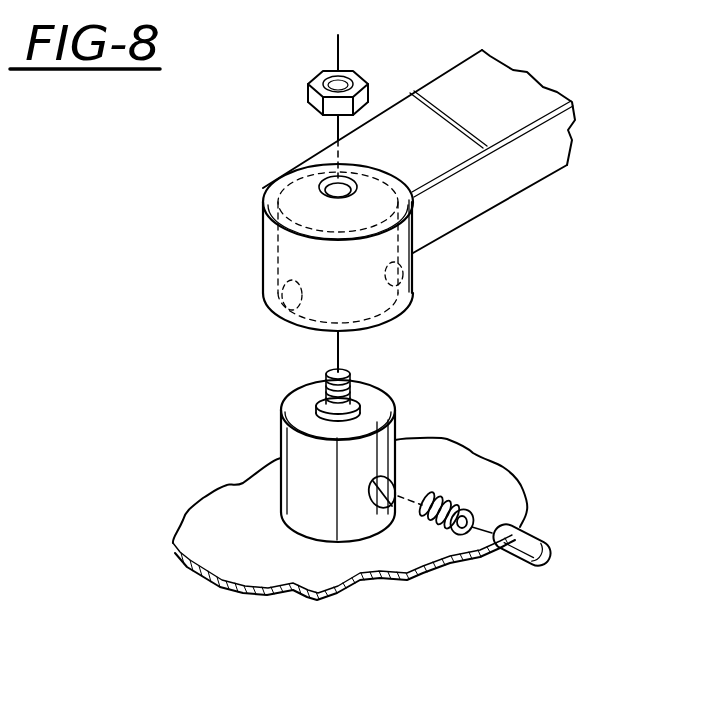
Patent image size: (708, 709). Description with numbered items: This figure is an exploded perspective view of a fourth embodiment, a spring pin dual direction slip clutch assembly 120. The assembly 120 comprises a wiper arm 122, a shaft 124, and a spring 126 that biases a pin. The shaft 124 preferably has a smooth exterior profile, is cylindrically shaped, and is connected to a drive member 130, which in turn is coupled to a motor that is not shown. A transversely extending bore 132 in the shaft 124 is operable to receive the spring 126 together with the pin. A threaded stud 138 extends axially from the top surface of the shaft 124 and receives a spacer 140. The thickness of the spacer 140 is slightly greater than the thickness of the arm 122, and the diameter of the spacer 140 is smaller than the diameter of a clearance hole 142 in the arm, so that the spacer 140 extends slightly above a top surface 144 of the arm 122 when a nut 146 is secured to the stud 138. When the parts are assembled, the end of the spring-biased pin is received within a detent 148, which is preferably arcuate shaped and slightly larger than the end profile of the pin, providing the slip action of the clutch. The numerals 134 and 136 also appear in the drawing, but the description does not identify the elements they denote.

The dual direction slip clutch assembly 120 is at (129, 221).
The wiper arm 122 is at (543, 143).
The shaft 124 is at (398, 460).
The spring 126 is at (455, 500).
The drive member 130 is at (270, 552).
The bore 132 is at (393, 502).
The cylindrical boss 134 is at (287, 317).
The side aperture 136 is at (262, 285).
The threaded stud 138 is at (350, 375).
The spacer 140 is at (360, 413).
The clearance hole 142 is at (324, 180).
The top surface 144 is at (368, 212).
The nut 146 is at (358, 80).
The detent 148 is at (413, 277).